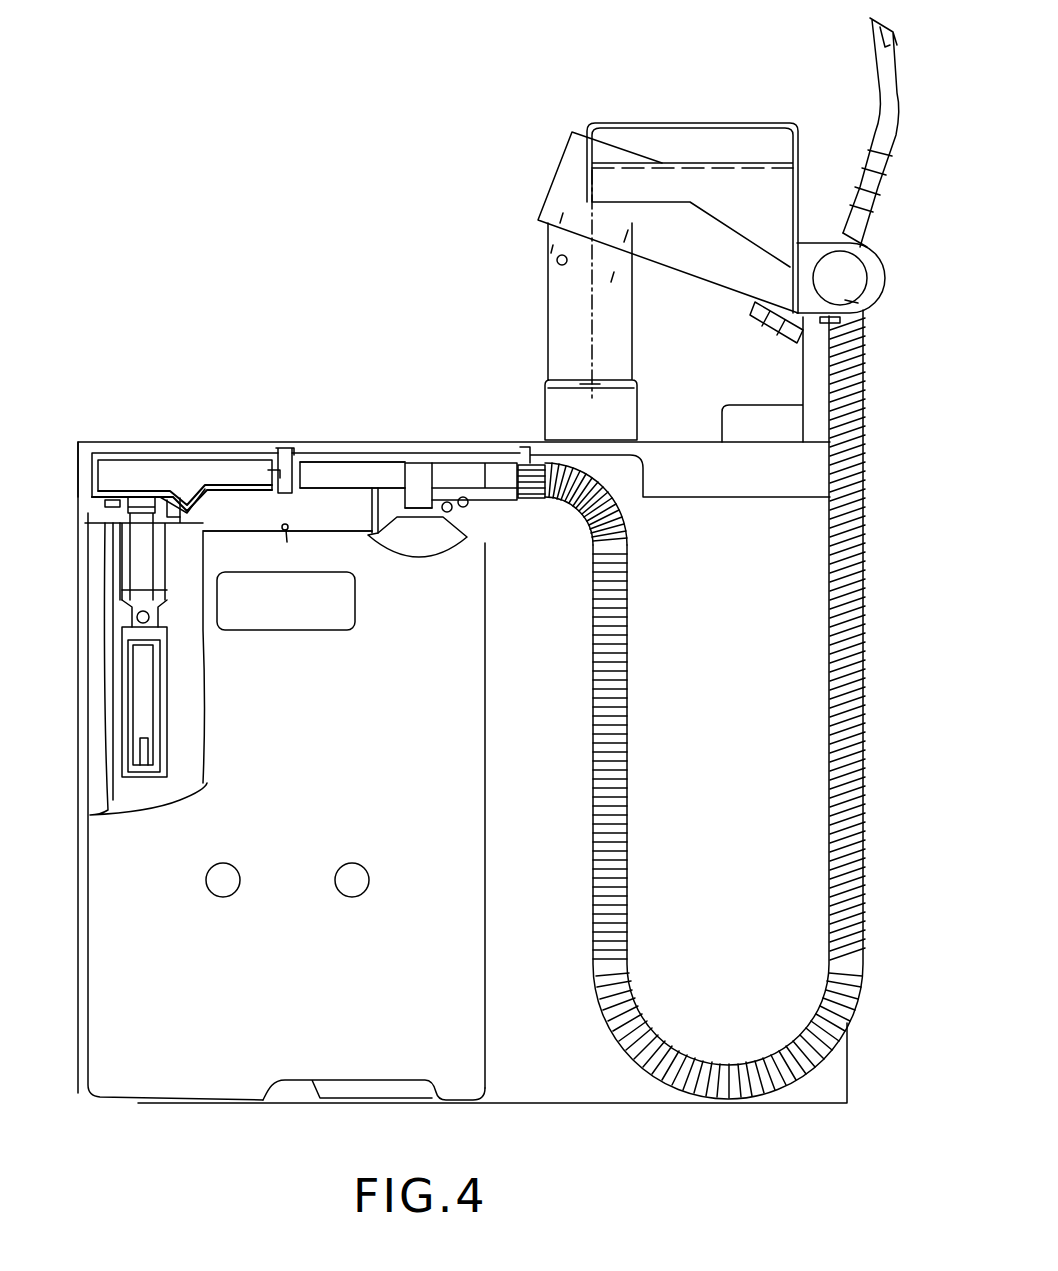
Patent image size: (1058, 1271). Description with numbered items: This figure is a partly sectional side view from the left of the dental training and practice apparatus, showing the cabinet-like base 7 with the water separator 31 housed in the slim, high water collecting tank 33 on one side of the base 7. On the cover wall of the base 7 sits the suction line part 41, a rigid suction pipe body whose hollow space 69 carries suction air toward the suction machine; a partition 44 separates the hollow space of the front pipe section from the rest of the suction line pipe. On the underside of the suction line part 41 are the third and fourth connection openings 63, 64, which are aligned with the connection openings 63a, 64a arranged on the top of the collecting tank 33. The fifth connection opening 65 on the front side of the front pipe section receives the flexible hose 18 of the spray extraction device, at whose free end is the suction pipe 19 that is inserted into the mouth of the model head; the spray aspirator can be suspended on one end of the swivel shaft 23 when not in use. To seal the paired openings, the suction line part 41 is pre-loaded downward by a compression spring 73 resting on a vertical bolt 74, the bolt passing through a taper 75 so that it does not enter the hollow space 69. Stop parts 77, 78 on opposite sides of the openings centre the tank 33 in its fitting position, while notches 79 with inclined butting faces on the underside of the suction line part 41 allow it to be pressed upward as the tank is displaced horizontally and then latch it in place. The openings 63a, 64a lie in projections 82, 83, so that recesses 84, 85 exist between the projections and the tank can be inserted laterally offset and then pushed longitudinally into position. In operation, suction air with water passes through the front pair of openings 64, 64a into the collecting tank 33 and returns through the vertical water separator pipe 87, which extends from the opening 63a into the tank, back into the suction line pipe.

The cabinet-like base 7 is at (137, 1104).
The flexible hose 18 is at (840, 662).
The suction pipe 19 is at (888, 80).
The swivel shaft 23 is at (862, 300).
The water separator 31 is at (263, 1103).
The water collecting tank 33 is at (428, 787).
The suction line part 41 is at (322, 452).
The partition 44 is at (388, 480).
The third connection opening 63 is at (135, 497).
The connection opening 63a is at (137, 508).
The fourth connection opening 64 is at (425, 502).
The connection opening 64a is at (410, 513).
The fifth connection opening 65 is at (510, 470).
The hollow space 69 is at (200, 478).
The compression spring 73 is at (280, 490).
The vertical bolt 74 is at (272, 500).
The taper 75 is at (273, 473).
The stop part 77 is at (362, 503).
The stop part 78 is at (387, 543).
The notch 79 is at (190, 500).
The projection 82 is at (85, 497).
The projection 83 is at (110, 812).
The underside recess 84 is at (325, 495).
The upper-side recess 85 is at (292, 547).
The vertical water separator pipe 87 is at (172, 743).